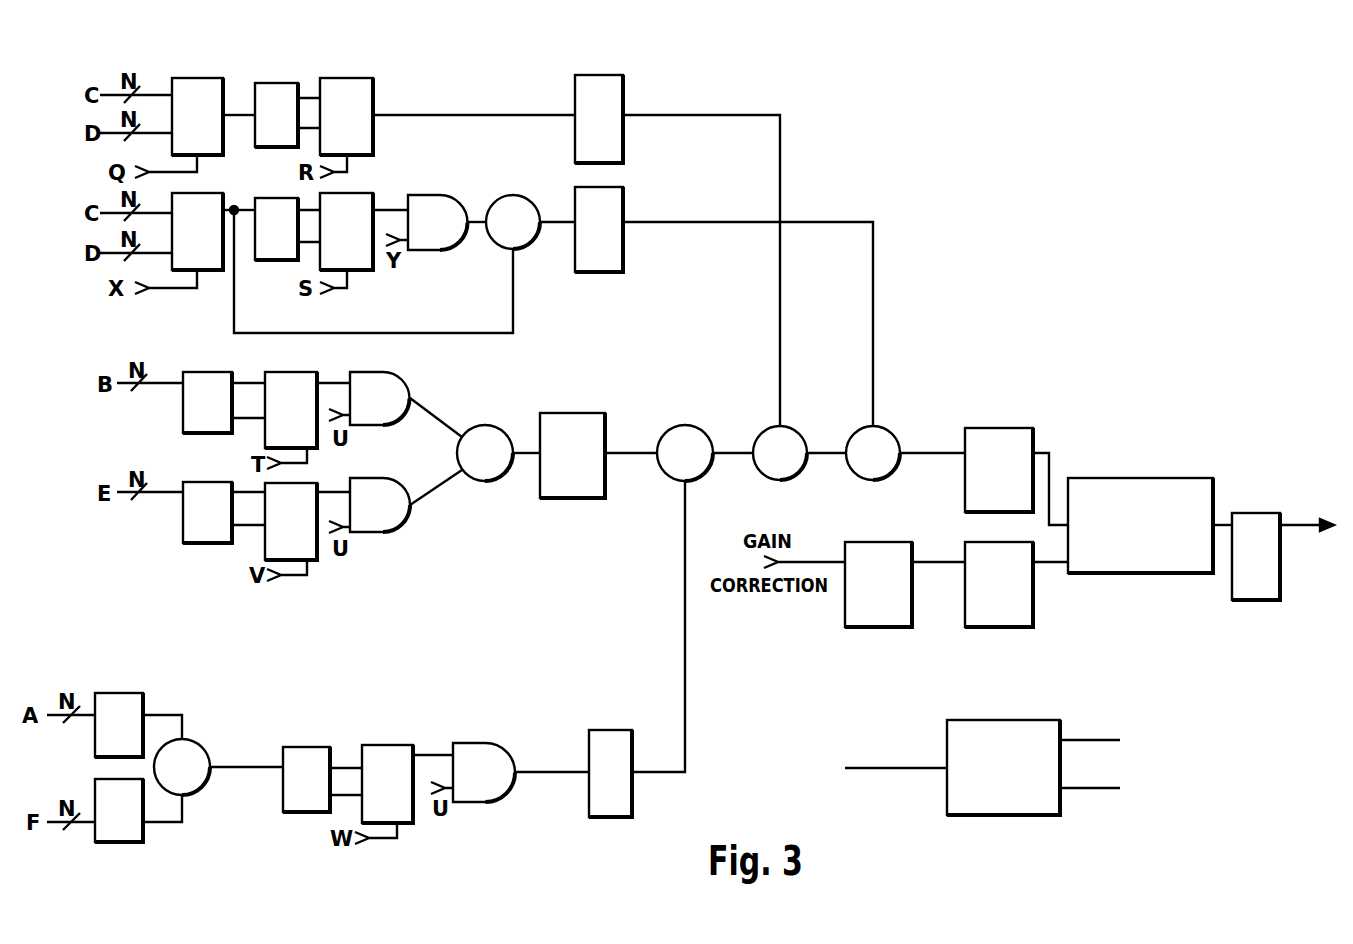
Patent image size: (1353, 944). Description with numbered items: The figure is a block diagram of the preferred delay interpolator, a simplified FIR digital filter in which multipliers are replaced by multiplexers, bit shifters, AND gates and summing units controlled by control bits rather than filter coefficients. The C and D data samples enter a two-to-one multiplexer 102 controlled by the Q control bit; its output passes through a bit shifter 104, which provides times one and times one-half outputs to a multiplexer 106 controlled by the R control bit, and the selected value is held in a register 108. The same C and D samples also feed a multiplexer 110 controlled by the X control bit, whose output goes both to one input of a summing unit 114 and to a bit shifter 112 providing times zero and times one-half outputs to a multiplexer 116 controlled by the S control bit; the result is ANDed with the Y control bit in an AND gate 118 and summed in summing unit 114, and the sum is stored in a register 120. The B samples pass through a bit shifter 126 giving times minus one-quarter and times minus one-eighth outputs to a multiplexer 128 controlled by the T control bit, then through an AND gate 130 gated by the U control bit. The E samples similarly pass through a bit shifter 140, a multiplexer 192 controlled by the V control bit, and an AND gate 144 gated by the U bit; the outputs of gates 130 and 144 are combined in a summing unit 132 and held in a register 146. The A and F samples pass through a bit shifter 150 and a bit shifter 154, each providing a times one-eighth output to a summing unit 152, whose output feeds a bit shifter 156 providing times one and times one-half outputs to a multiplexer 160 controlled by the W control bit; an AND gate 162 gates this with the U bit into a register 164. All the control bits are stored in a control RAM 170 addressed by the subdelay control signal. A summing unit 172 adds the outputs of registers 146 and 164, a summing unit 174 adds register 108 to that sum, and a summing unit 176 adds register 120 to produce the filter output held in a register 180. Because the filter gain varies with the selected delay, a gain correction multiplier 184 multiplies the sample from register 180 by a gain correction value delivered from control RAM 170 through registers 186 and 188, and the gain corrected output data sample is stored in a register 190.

The multiplexer 102 is at (213, 78).
The bit shifter 104 is at (280, 83).
The multiplexer 106 is at (345, 78).
The register 108 is at (595, 75).
The multiplexer 110 is at (192, 193).
The bit shifter 112 is at (262, 198).
The summing unit 114 is at (516, 196).
The multiplexer 116 is at (360, 193).
The AND gate 118 is at (448, 195).
The register 120 is at (623, 212).
The bit shifter 126 is at (205, 372).
The multiplexer 128 is at (305, 372).
The AND gate 130 is at (410, 381).
The summing unit 132 is at (485, 425).
The bit shifter 140 is at (208, 482).
The AND gate 144 is at (410, 485).
The register 146 is at (568, 413).
The bit shifter 150 is at (127, 693).
The summing unit 152 is at (203, 748).
The bit shifter 154 is at (120, 842).
The bit shifter 156 is at (303, 747).
The multiplexer 160 is at (395, 745).
The AND gate 162 is at (478, 743).
The register 164 is at (598, 730).
The control RAM 170 is at (1015, 720).
The summing unit 172 is at (680, 425).
The summing unit 174 is at (763, 428).
The summing unit 176 is at (858, 428).
The register 180 is at (990, 428).
The gain correction multiplier 184 is at (1130, 478).
The register 186 is at (880, 542).
The register 188 is at (970, 542).
The register 190 is at (1250, 513).
The 2-1 multiplexer 192 is at (262, 541).